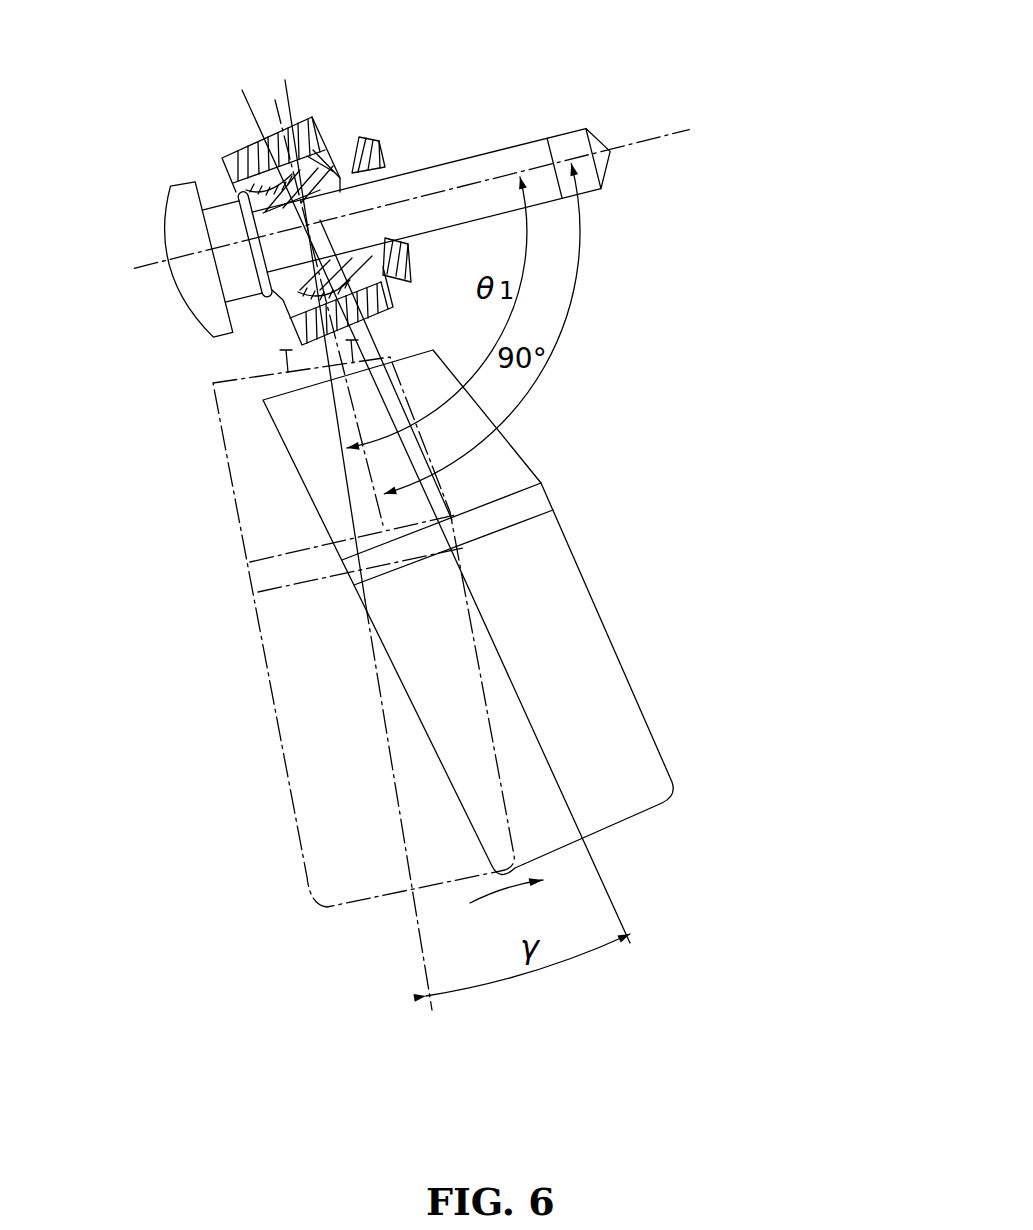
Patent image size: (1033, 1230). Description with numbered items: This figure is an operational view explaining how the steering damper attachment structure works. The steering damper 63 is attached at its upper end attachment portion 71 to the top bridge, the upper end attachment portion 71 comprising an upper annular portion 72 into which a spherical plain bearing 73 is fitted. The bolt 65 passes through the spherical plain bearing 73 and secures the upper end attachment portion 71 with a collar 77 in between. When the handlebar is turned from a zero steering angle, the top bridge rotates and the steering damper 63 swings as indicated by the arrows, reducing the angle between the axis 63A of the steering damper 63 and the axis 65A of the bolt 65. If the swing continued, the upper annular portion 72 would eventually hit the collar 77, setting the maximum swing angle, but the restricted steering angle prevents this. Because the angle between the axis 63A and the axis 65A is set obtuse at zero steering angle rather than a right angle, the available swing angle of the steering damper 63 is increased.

The steering damper 63 is at (585, 588).
The axis of the steering damper 63A is at (598, 866).
The bolt 65 is at (453, 172).
The axis of the bolt 65A is at (656, 140).
The upper end attachment portion 71 is at (222, 153).
The upper annular portion 72 is at (308, 115).
The spherical plain bearing 73 is at (283, 307).
The collar 77 is at (363, 137).